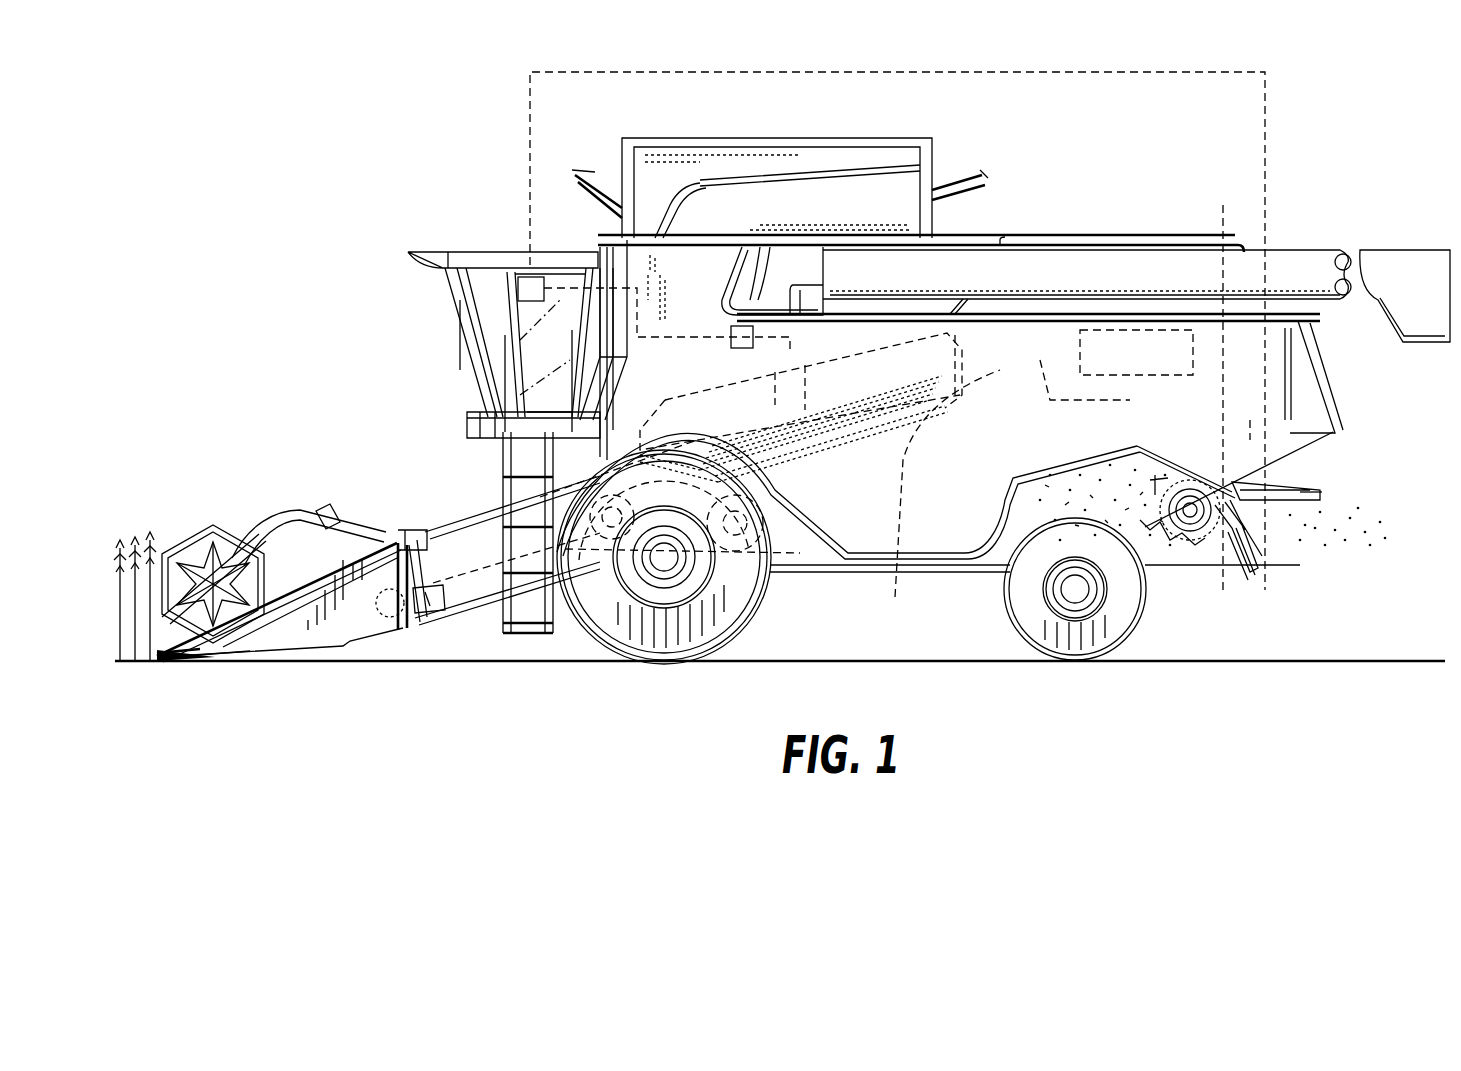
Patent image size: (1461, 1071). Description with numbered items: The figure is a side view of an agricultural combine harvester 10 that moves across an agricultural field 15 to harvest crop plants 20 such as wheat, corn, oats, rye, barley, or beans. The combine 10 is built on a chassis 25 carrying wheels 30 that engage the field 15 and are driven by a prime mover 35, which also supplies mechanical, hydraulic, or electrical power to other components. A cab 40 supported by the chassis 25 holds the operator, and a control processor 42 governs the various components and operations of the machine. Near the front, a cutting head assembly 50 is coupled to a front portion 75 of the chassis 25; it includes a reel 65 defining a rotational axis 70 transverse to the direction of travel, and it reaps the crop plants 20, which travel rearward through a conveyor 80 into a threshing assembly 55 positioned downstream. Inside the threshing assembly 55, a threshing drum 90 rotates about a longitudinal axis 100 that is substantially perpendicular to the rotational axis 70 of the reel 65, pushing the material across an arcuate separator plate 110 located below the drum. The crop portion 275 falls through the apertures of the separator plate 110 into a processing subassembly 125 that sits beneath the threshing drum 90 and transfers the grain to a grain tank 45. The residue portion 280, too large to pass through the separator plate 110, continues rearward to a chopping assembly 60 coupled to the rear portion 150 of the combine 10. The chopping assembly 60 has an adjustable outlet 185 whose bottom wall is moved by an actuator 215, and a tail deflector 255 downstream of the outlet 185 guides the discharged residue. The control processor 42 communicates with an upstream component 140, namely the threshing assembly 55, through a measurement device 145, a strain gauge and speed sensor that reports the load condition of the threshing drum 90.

The agricultural combine harvester 10 is at (1388, 140).
The agricultural field 15 is at (1345, 663).
The crop plants 20 is at (143, 508).
The chassis 25 is at (848, 572).
The wheels 30 is at (590, 642).
The prime mover 35 is at (1125, 290).
The cab 40 is at (440, 285).
The control processor 42 is at (528, 289).
The grain tank 45 is at (888, 140).
The cutting head assembly 50 is at (271, 460).
The threshing assembly 55 is at (1042, 344).
The chopping assembly 60 is at (1368, 468).
The reel 65 is at (232, 560).
The rotational axis 70 is at (232, 600).
The front portion 75 is at (455, 470).
The conveyor 80 is at (473, 528).
The threshing drum 90 is at (885, 330).
The longitudinal axis 100 is at (1002, 365).
The separator plate 110 is at (770, 502).
The processing subassembly 125 is at (1223, 381).
The upstream component 140 is at (696, 310).
The measurement device 145 is at (744, 326).
The rear portion 150 is at (1318, 450).
The adjustable outlet 185 is at (1243, 575).
The actuator 215 is at (1230, 545).
The tail deflector 255 is at (1335, 497).
The crop portion 275 is at (992, 535).
The residue portion 280 is at (1352, 550).